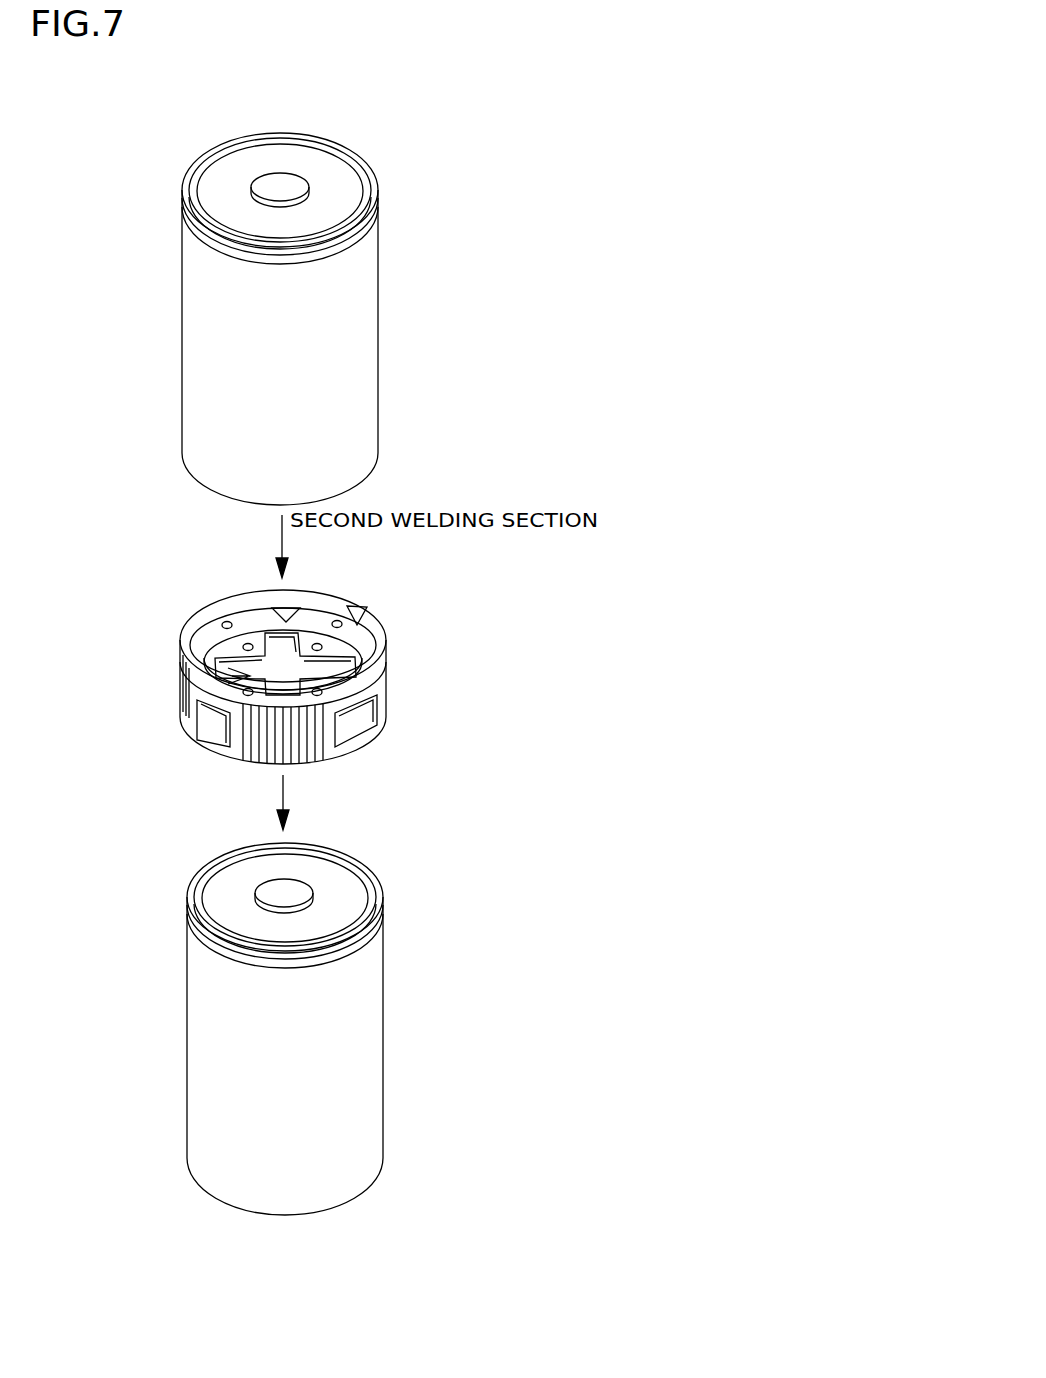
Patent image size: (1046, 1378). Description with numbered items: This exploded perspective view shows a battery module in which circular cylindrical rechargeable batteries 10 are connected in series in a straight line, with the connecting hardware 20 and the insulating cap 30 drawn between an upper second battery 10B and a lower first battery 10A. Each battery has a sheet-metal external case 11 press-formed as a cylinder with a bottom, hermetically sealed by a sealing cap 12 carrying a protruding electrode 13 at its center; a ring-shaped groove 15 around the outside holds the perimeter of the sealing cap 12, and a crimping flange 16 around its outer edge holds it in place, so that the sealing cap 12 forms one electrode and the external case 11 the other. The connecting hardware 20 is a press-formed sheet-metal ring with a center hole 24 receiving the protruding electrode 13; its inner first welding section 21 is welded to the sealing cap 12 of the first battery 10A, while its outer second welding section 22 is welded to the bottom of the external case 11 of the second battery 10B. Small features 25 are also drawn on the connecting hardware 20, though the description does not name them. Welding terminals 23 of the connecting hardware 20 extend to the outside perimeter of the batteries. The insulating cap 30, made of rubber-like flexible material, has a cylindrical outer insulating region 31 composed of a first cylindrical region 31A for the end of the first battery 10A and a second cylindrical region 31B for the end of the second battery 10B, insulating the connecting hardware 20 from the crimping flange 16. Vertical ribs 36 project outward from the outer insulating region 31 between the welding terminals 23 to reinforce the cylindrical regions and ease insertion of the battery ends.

The rechargeable battery 10 is at (413, 674).
The first battery 10A is at (393, 793).
The second battery 10B is at (394, 348).
The external case 11 is at (362, 1117).
The sealing cap 12 is at (340, 898).
The protruding electrode 13 is at (282, 900).
The ring-shaped groove 15 is at (309, 962).
The crimping flange 16 is at (360, 873).
The connecting hardware 20 is at (506, 673).
The first welding section 21 is at (192, 643).
The second welding section 22 is at (251, 611).
The welding terminals 23 is at (212, 733).
The center hole 24 is at (215, 676).
The through holes 25 is at (226, 620).
The insulating cap 30 is at (545, 679).
The outer insulating region 31 is at (545, 702).
The first cylindrical region 31A is at (386, 715).
The second cylindrical region 31B is at (386, 673).
The vertical ribs 36 is at (265, 738).